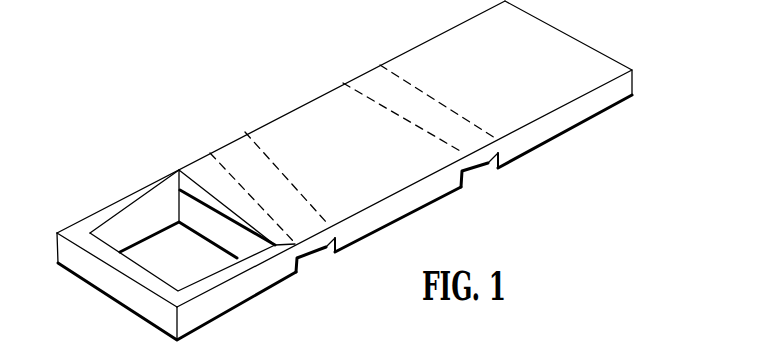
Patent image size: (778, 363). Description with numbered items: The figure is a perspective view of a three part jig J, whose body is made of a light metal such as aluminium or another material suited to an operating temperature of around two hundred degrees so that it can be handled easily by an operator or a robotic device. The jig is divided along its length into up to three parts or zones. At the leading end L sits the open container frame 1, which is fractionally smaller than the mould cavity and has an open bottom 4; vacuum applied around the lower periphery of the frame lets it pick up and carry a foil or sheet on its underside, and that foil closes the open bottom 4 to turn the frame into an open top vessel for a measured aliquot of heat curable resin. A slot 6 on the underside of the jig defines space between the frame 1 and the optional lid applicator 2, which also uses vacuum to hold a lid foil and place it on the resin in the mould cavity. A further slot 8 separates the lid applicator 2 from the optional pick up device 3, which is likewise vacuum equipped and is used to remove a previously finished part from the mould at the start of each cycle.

The container frame 1 is at (171, 257).
The lid applicator 2 is at (300, 125).
The pick up device 3 is at (465, 48).
The open bottom 4 is at (228, 233).
The slot 6 is at (310, 260).
The slot 8 is at (478, 173).
The jig J is at (108, 196).
The leading end L is at (107, 306).